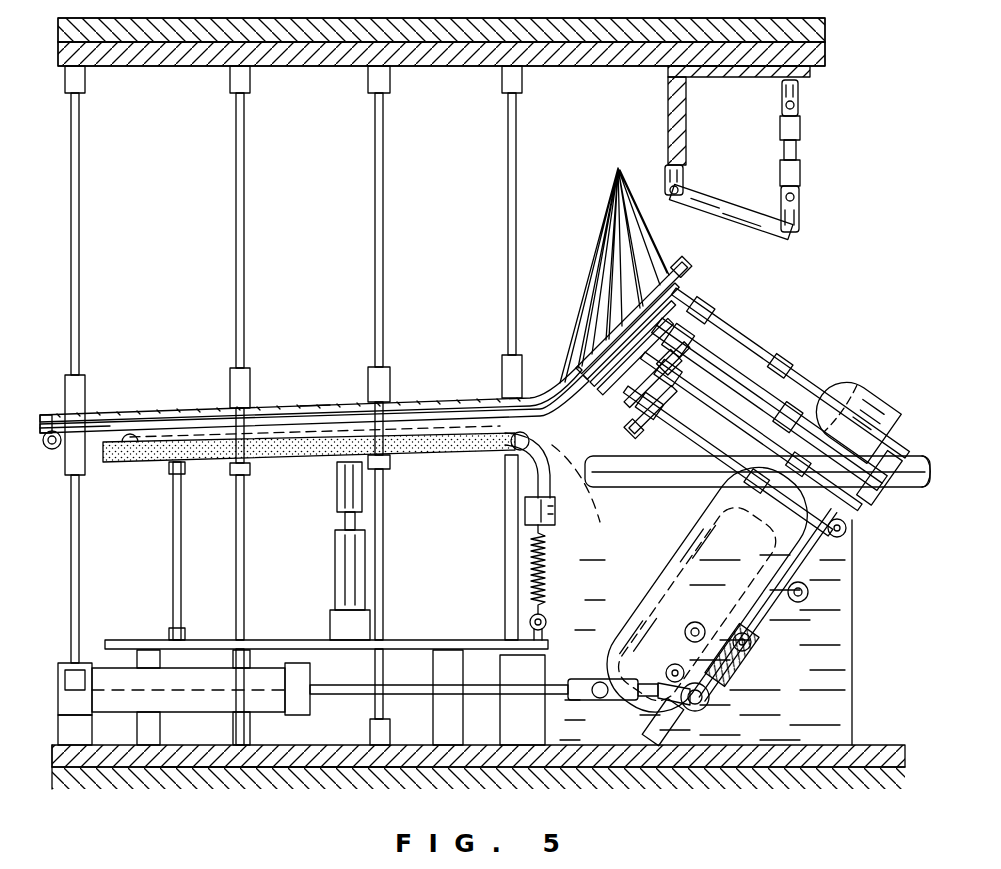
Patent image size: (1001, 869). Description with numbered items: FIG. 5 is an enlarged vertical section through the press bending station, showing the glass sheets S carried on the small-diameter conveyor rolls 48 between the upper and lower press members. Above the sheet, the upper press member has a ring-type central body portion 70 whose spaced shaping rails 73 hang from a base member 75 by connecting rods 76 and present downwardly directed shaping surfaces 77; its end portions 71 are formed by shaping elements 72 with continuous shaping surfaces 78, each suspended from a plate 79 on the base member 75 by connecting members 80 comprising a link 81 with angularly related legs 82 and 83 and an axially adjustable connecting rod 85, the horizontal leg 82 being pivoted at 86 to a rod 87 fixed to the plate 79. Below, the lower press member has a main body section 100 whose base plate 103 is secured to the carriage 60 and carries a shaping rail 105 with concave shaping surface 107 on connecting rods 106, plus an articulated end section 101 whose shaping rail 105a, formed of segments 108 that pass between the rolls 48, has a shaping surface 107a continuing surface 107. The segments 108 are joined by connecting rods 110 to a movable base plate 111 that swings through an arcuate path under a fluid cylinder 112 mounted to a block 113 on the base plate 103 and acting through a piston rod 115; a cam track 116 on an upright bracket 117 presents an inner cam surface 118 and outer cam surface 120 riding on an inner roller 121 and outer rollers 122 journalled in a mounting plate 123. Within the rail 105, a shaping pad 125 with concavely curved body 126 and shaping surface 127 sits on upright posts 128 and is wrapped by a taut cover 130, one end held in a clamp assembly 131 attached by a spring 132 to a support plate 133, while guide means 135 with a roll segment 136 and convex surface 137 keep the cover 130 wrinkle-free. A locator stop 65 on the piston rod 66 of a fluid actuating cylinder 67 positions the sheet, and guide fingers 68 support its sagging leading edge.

The conveyor rolls 48 is at (930, 452).
The carriage 60 is at (862, 790).
The locator stops 65 is at (337, 478).
The piston rod 66 is at (345, 520).
The fluid actuating cylinder 67 is at (335, 570).
The guide fingers 68 is at (50, 452).
The central body portion 70 is at (301, 468).
The end portions 71 is at (598, 350).
The shaping elements 72 is at (630, 300).
The shaping rails 73 is at (392, 405).
The base member 75 is at (305, 66).
The connecting rods 76 is at (80, 210).
The shaping surfaces 77 is at (290, 408).
The shaping surfaces 78 is at (690, 276).
The plate 79 is at (800, 72).
The connecting members 80 is at (604, 263).
The link 81 is at (730, 190).
The leg 82 is at (720, 195).
The leg 83 is at (620, 248).
The connecting rod 85 is at (798, 150).
The pivotal mounting 86 is at (670, 180).
The rod 87 is at (668, 115).
The main body section 100 is at (301, 468).
The end section 101 is at (875, 392).
The base plate 103 is at (246, 775).
The shaping rail 105 is at (47, 418).
The shaping rail 105a is at (580, 412).
The connecting rods 106 is at (80, 605).
The shaping surface 107 is at (92, 424).
The shaping surface 107a is at (588, 385).
The segments 108 is at (630, 370).
The connecting rods 110 is at (800, 380).
The movable base plate 111 is at (892, 505).
The fluid cylinder 112 is at (205, 702).
The block 113 is at (75, 745).
The piston rod 115 is at (432, 694).
The cam track 116 is at (548, 625).
The upright bracket 117 is at (682, 712).
The inner cam surface 118 is at (714, 625).
The outer cam surface 120 is at (640, 702).
The inner roller 121 is at (650, 640).
The outer rollers 122 is at (842, 560).
The mounting plate 123 is at (855, 692).
The shaping pad 125 is at (215, 470).
The body 126 is at (160, 462).
The shaping surface 127 is at (128, 450).
The upright post 128 is at (505, 522).
The cover 130 is at (190, 430).
The clamp assembly 131 is at (560, 515).
The spring 132 is at (548, 572).
The support plate 133 is at (540, 640).
The guide means 135 is at (508, 446).
The roll segment 136 is at (532, 450).
The convex surface 137 is at (587, 486).
The glass sheets S is at (447, 404).